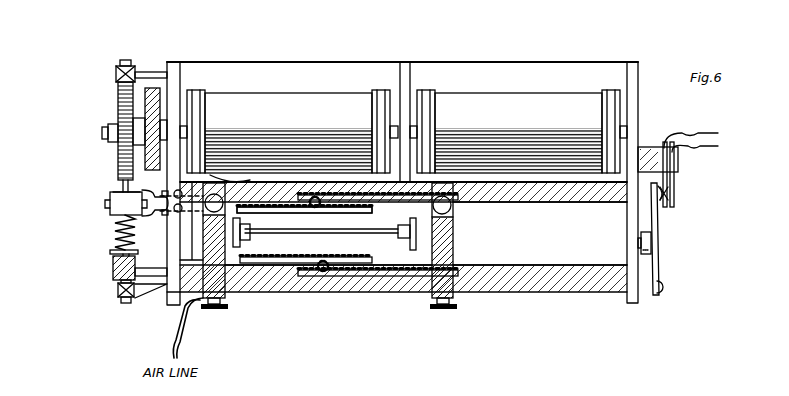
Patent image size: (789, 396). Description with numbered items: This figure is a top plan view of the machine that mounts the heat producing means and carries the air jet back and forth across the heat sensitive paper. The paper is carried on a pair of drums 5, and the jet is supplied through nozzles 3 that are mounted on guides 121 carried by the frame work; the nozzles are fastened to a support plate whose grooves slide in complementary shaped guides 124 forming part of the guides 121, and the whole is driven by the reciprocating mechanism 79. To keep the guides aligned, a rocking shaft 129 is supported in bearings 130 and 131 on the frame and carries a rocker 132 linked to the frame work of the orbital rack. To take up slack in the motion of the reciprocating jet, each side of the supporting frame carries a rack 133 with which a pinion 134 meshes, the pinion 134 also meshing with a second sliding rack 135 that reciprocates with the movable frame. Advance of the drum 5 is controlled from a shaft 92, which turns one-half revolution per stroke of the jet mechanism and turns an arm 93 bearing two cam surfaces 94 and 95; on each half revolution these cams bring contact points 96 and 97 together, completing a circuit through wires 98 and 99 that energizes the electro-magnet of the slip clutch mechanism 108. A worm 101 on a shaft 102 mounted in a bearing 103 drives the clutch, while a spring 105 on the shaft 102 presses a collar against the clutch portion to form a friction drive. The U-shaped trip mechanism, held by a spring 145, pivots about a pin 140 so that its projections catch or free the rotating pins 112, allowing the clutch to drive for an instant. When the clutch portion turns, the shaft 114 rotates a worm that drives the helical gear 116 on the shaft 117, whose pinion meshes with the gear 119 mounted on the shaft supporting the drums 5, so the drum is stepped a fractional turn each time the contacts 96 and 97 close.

The nozzles 3 is at (204, 300).
The drum 5 is at (305, 97).
The reciprocating mechanism 79 is at (412, 262).
The shaft 92 is at (640, 240).
The arm 93 is at (668, 250).
The cam surface 94 is at (661, 200).
The cam surface 95 is at (664, 290).
The contact point 96 is at (664, 205).
The contact point 97 is at (676, 207).
The wire 98 is at (690, 148).
The lead wire 99 is at (707, 147).
The worm 101 is at (116, 275).
The shaft 102 is at (118, 292).
The bearing 103 is at (150, 300).
The spring 105 is at (115, 235).
The slip clutch mechanism 108 is at (116, 192).
The pins 112 is at (108, 208).
The shaft 114 is at (118, 186).
The helical gear 116 is at (116, 99).
The shaft 117 is at (165, 190).
The gear 119 is at (150, 86).
The guides 121 is at (263, 287).
The guides 124 is at (556, 266).
The rocking shaft 129 is at (321, 224).
The bearing 130 is at (243, 233).
The bearing 131 is at (400, 237).
The rocker 132 is at (418, 219).
The rack 133 is at (300, 196).
The pinion 134 is at (340, 208).
The sliding rack 135 is at (238, 210).
The pin 140 is at (160, 192).
The spring 145 is at (222, 175).